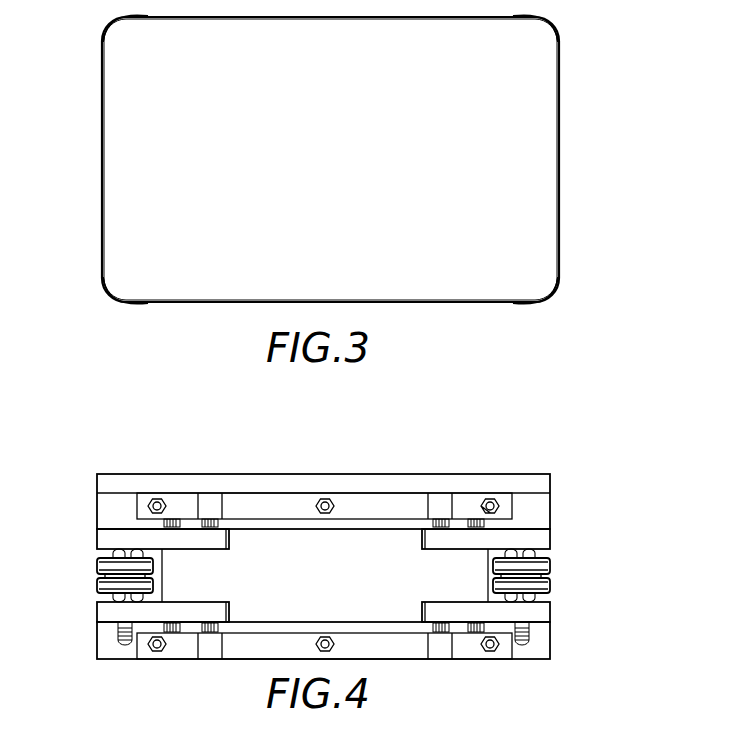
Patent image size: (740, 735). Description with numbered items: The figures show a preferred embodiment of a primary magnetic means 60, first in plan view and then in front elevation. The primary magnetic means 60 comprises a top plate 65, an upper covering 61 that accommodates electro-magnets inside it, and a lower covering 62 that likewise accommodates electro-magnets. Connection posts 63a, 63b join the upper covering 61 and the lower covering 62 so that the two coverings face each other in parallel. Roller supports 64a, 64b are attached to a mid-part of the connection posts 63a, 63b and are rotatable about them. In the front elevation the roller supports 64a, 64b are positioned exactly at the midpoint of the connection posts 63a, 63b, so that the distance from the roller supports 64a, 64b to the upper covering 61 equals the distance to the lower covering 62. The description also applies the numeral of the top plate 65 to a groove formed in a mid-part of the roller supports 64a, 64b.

In FIG. 3, the primary magnetic means 60 is at (580, 29).
In FIG. 4, the upper covering 61 is at (550, 507).
In FIG. 4, the lower covering 62 is at (500, 659).
In FIG. 4, the connection post 63a is at (113, 553).
In FIG. 4, the connection post 63b is at (533, 552).
In FIG. 4, the roller support 64a is at (97, 588).
In FIG. 4, the roller support 64b is at (550, 586).
In FIG. 3, the top plate 65 is at (558, 247).
In FIG. 4, the top plate 65 is at (157, 576).